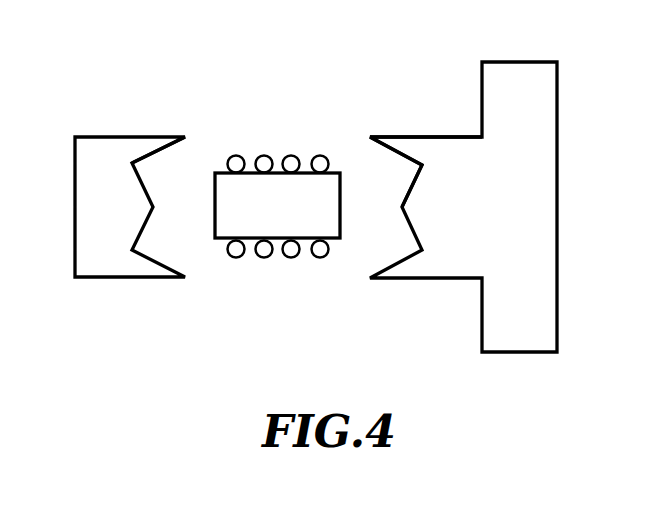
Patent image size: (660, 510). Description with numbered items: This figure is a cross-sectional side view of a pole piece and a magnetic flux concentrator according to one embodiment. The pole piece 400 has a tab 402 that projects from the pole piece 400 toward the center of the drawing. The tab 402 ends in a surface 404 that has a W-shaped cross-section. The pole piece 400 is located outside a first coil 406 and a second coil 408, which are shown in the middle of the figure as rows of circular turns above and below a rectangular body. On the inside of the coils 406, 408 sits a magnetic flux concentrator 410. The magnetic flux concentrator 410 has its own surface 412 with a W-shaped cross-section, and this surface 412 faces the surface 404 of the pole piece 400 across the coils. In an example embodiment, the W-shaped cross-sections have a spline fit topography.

The pole piece 400 is at (557, 131).
The tab 402 is at (449, 137).
The surface 404 is at (408, 184).
The first coil 406 is at (288, 144).
The second coil 408 is at (287, 267).
The magnetic flux concentrator 410 is at (107, 137).
The surface 412 is at (160, 152).